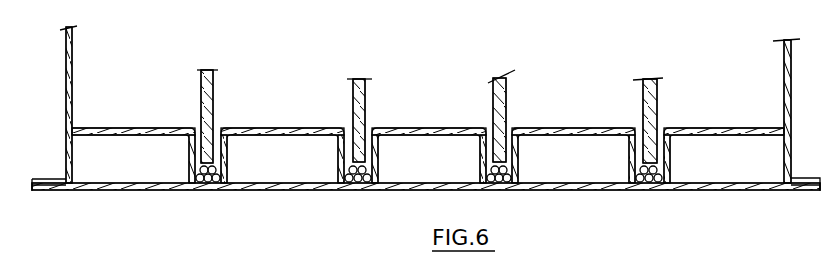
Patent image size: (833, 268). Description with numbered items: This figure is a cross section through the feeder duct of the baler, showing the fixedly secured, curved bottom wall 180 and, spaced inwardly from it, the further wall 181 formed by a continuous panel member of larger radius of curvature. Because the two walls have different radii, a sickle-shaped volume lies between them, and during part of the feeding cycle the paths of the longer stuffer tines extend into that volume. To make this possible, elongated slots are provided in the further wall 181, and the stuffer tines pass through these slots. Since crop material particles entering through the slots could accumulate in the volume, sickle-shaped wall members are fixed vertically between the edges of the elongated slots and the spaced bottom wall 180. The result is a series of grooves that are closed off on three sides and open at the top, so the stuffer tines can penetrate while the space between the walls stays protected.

The bottom wall element 180 is at (440, 190).
The further wall 181 is at (429, 118).